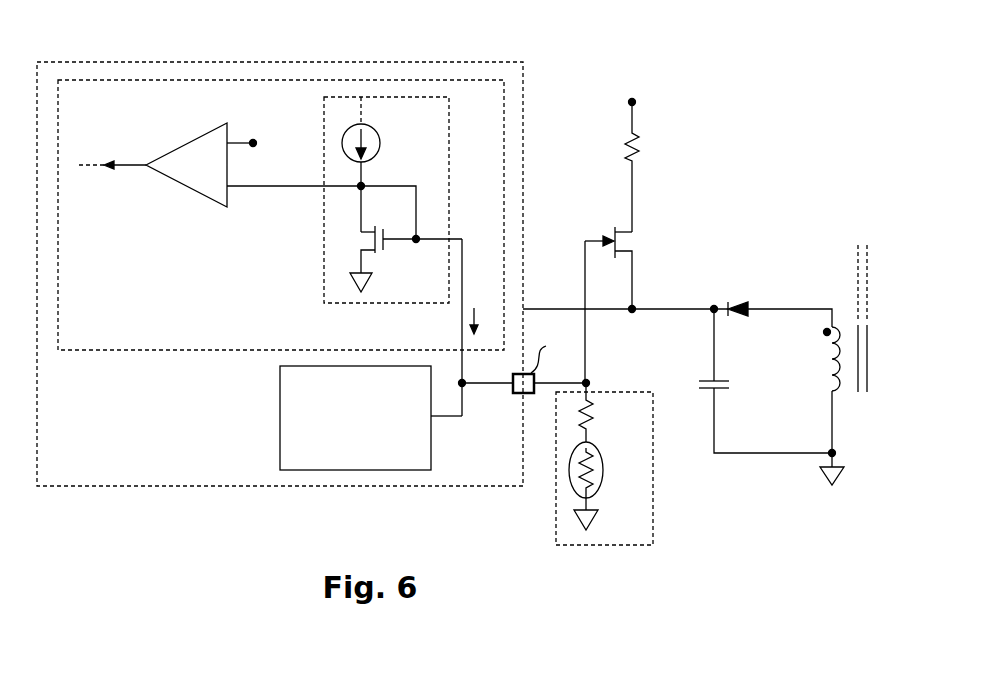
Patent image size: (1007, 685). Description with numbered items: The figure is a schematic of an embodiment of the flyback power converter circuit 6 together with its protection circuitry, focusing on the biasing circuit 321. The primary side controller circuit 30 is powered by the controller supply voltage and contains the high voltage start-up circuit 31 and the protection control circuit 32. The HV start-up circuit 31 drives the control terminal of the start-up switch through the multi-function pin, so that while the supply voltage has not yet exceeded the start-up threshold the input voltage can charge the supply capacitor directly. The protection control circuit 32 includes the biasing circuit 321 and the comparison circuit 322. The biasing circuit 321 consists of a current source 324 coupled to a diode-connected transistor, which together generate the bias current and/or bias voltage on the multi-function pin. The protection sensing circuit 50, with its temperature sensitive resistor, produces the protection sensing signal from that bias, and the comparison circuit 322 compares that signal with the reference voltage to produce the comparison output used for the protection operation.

The flyback power converter circuit 6 is at (253, 30).
The primary side controller circuit 30 is at (487, 434).
The high voltage (HV) start-up circuit 31 is at (347, 460).
The protection control circuit 32 is at (135, 330).
The biasing circuit 321 is at (408, 299).
The comparison circuit 322 is at (219, 166).
The current source 324 is at (380, 140).
The protection sensing circuit 50 is at (618, 530).